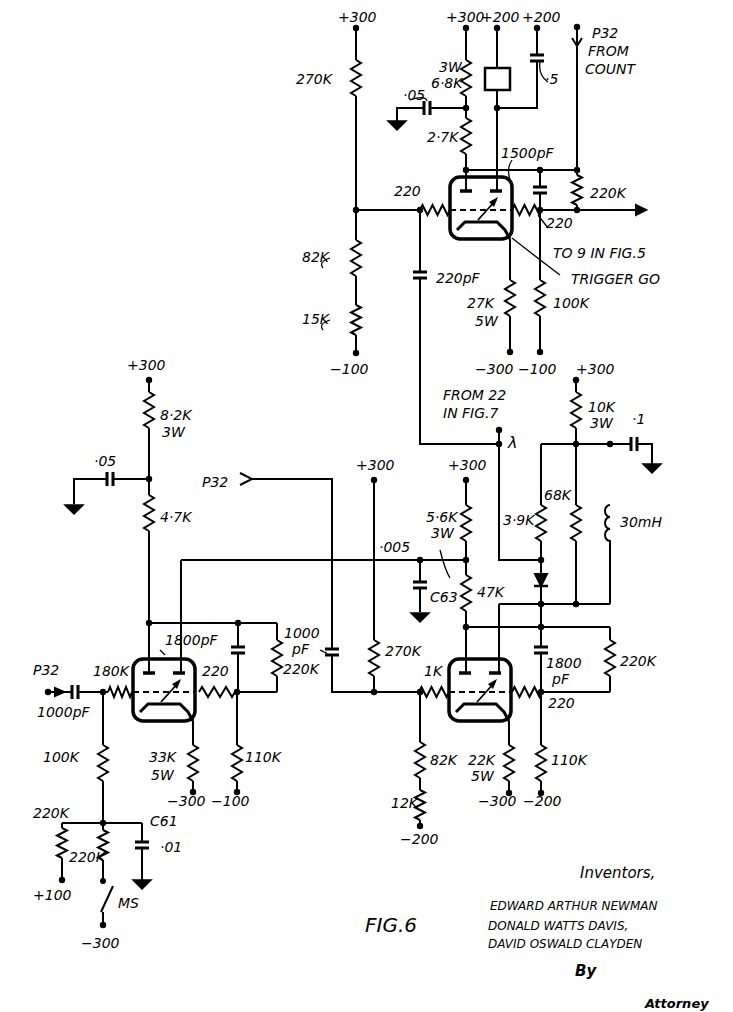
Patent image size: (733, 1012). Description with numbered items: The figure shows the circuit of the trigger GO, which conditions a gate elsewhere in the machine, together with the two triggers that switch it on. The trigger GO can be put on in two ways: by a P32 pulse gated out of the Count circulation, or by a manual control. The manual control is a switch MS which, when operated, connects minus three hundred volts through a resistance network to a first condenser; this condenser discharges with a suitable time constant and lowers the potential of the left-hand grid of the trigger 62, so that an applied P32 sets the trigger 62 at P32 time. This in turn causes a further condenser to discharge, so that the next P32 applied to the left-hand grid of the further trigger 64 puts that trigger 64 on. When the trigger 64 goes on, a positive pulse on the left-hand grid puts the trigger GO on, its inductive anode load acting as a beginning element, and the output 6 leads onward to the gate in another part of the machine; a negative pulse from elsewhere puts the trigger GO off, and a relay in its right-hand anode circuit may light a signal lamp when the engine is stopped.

The trigger 62 is at (164, 703).
The further trigger 64 is at (480, 703).
The output terminal to Fig. 5 6 is at (637, 238).